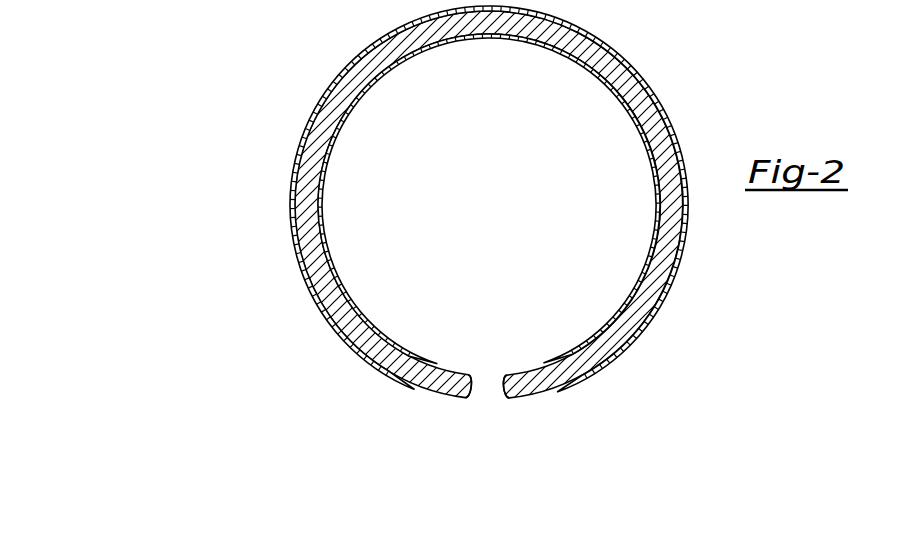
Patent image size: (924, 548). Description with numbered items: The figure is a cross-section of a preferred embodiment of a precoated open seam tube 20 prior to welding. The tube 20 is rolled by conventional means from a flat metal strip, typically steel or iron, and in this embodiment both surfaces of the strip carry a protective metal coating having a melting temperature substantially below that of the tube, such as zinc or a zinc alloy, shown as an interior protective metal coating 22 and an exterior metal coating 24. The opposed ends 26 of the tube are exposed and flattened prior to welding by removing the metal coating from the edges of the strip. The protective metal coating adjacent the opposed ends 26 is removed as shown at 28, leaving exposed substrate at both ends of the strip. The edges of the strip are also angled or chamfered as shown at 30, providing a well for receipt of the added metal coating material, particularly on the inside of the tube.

The open seam tube 20 is at (317, 270).
The interior protective metal coating 22 is at (364, 89).
The exterior metal coating 24 is at (292, 183).
The opposed ends of the tube 26 is at (468, 387).
The removed coating region 28 is at (542, 388).
The chamfered edge 30 is at (469, 394).